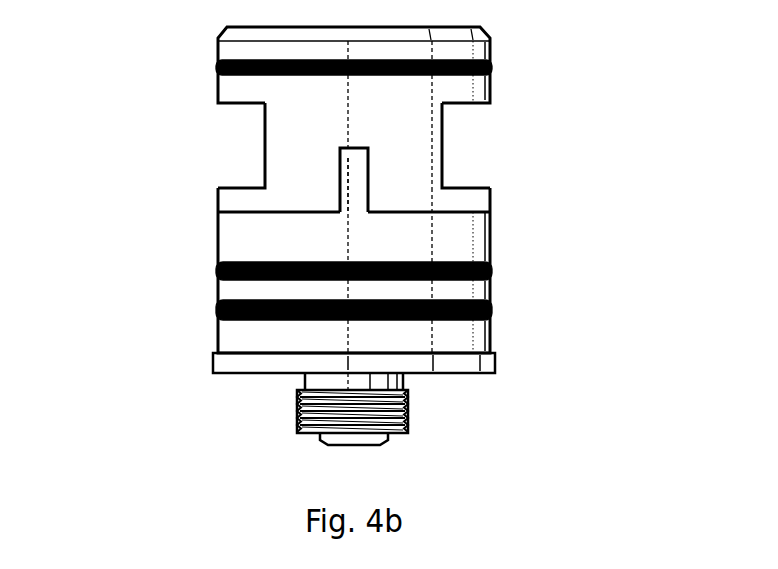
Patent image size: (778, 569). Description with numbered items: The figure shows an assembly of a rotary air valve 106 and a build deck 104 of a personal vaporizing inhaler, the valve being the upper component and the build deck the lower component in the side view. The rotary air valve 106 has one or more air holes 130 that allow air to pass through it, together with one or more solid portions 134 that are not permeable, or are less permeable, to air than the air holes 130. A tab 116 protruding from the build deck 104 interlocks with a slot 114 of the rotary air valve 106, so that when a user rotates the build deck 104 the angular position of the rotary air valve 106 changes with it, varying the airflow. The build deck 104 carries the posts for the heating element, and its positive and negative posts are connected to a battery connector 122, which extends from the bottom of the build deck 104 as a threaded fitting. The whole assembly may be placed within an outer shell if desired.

The build deck 104 is at (215, 236).
The rotary air valve 106 is at (495, 92).
The slot 114 is at (377, 180).
The tab 116 is at (357, 195).
The battery connector 122 is at (403, 443).
The air holes 130 is at (223, 150).
The solid portions 134 is at (333, 103).